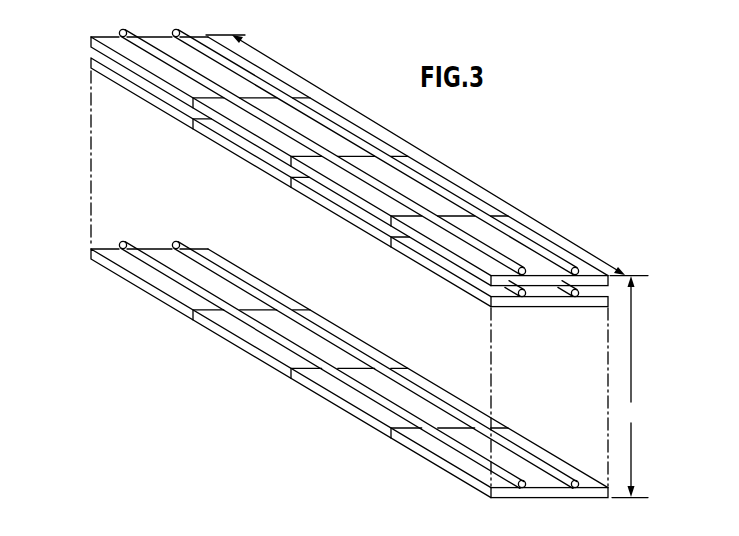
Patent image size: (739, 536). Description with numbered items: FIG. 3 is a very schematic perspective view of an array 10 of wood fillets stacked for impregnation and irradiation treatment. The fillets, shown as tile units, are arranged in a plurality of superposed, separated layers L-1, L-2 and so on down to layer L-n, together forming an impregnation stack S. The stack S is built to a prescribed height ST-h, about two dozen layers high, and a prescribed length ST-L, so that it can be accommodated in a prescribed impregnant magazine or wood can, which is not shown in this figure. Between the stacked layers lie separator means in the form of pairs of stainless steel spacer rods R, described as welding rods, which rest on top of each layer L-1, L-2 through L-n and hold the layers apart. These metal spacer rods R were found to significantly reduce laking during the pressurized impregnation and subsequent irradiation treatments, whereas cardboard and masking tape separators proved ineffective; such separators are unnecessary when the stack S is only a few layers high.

The stacked structure 10 is at (117, 34).
The spacer rods R is at (176, 29).
The first fillet layer L-1 is at (91, 42).
The second fillet layer L-2 is at (91, 63).
The nth fillet layer L-n is at (91, 251).
The stack S is at (320, 260).
The stack length ST-L is at (427, 155).
The stack height ST-h is at (637, 387).